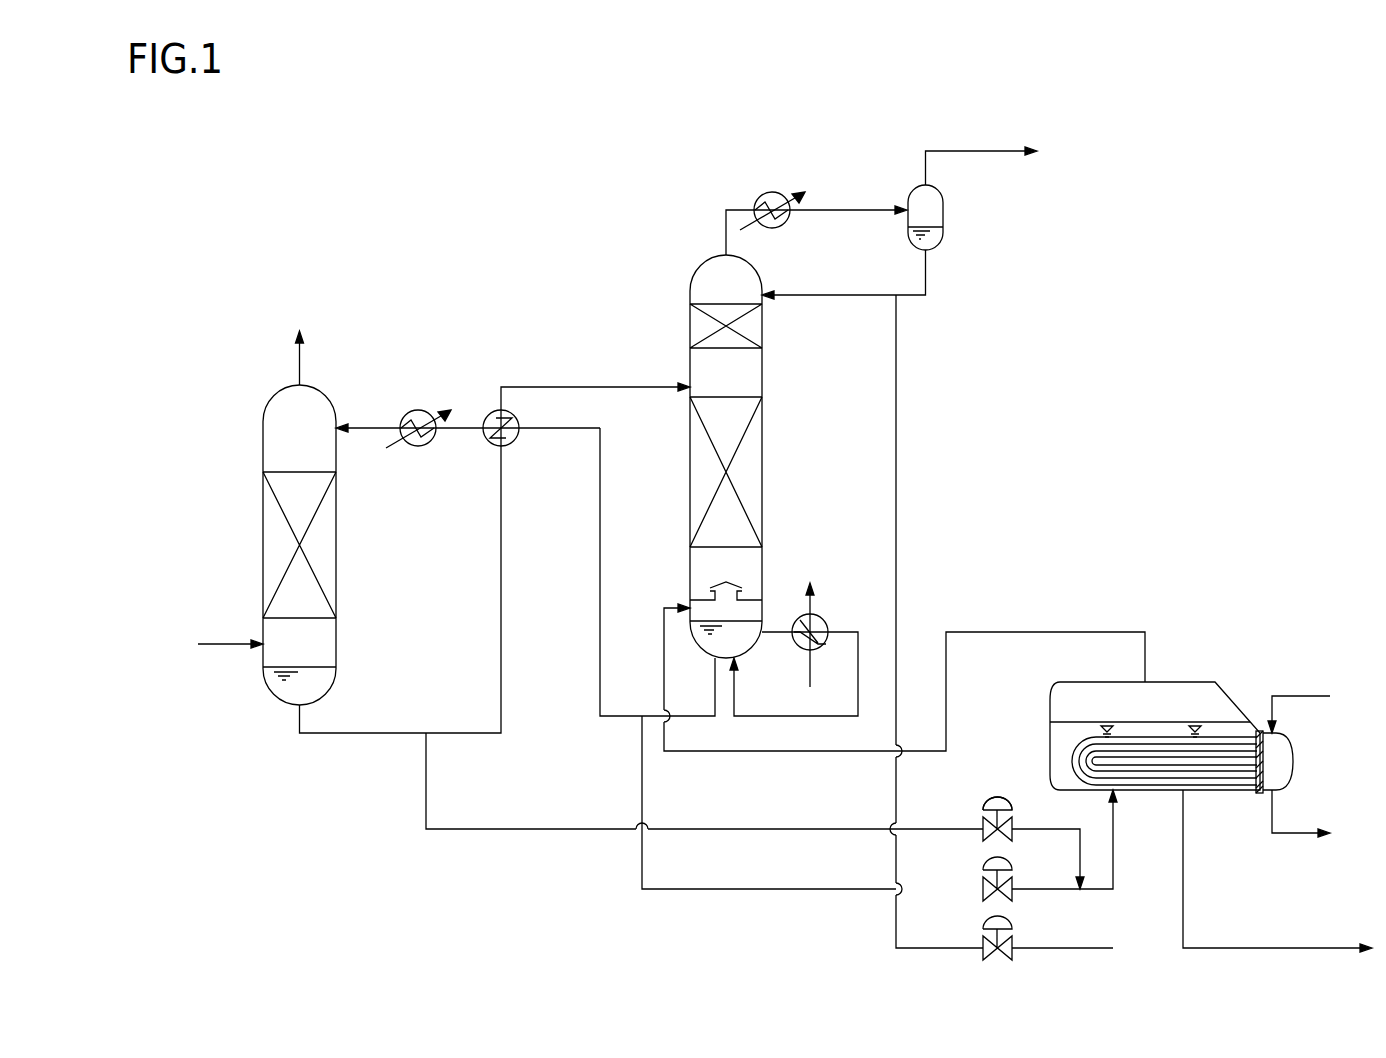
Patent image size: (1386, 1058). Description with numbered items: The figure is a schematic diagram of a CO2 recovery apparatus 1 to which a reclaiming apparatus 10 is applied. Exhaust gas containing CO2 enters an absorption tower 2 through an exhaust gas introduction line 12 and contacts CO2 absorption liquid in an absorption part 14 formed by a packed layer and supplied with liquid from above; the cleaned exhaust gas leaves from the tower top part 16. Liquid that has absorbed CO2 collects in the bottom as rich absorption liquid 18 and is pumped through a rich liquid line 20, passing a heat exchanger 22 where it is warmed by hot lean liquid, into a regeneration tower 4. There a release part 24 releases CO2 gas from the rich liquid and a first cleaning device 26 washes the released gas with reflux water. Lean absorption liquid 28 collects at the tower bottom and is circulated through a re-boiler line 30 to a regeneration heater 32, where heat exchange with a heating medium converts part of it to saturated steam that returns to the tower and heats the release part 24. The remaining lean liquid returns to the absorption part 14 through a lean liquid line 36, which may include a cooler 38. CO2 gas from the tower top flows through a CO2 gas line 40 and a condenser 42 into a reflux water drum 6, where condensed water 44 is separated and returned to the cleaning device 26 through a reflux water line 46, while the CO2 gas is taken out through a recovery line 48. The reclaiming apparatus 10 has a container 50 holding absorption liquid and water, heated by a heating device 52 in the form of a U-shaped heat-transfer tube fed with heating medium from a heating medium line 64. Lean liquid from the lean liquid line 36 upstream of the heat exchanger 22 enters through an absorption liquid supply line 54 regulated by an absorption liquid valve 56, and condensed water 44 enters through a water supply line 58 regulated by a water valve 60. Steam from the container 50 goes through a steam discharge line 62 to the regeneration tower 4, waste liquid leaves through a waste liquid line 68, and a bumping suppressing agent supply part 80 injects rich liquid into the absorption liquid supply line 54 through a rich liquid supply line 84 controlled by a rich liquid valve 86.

The CO2 recovery apparatus 1 is at (1323, 123).
The absorption tower 2 is at (328, 392).
The regeneration tower 4 is at (703, 263).
The reflux water drum 6 is at (945, 200).
The reclaiming apparatus 10 is at (1171, 723).
The exhaust gas introduction line 12 is at (218, 646).
The absorption part 14 is at (275, 542).
The tower top part 16 is at (299, 362).
The rich absorption liquid 18 is at (318, 686).
The rich liquid line 20 is at (378, 736).
The heat exchanger 22 is at (513, 446).
The release part 24 is at (700, 472).
The first cleaning device 26 is at (700, 326).
The lean absorption liquid 28 is at (743, 641).
The re-boiler line 30 is at (858, 663).
The regeneration heater 32 is at (822, 615).
The lean liquid line 36 is at (600, 578).
The cooler 38 is at (418, 410).
The CO2 gas line 40 is at (726, 212).
The condenser 42 is at (773, 192).
The condensed water 44 is at (935, 238).
The reflux water line 46 is at (830, 298).
The recovery line 48 is at (988, 150).
The container 50 is at (1196, 681).
The heating device 52 is at (1219, 792).
The absorption liquid supply line 54 is at (936, 887).
The absorption liquid valve 56 is at (1010, 865).
The water supply line 58 is at (936, 946).
The water valve 60 is at (1010, 923).
The steam discharge line 62 is at (1044, 631).
The heating medium line 64 is at (1312, 695).
The waste liquid line 68 is at (1251, 946).
The bumping suppressing agent supply part 80 is at (1002, 785).
The rich liquid supply line 84 is at (936, 827).
The rich liquid valve 86 is at (993, 802).